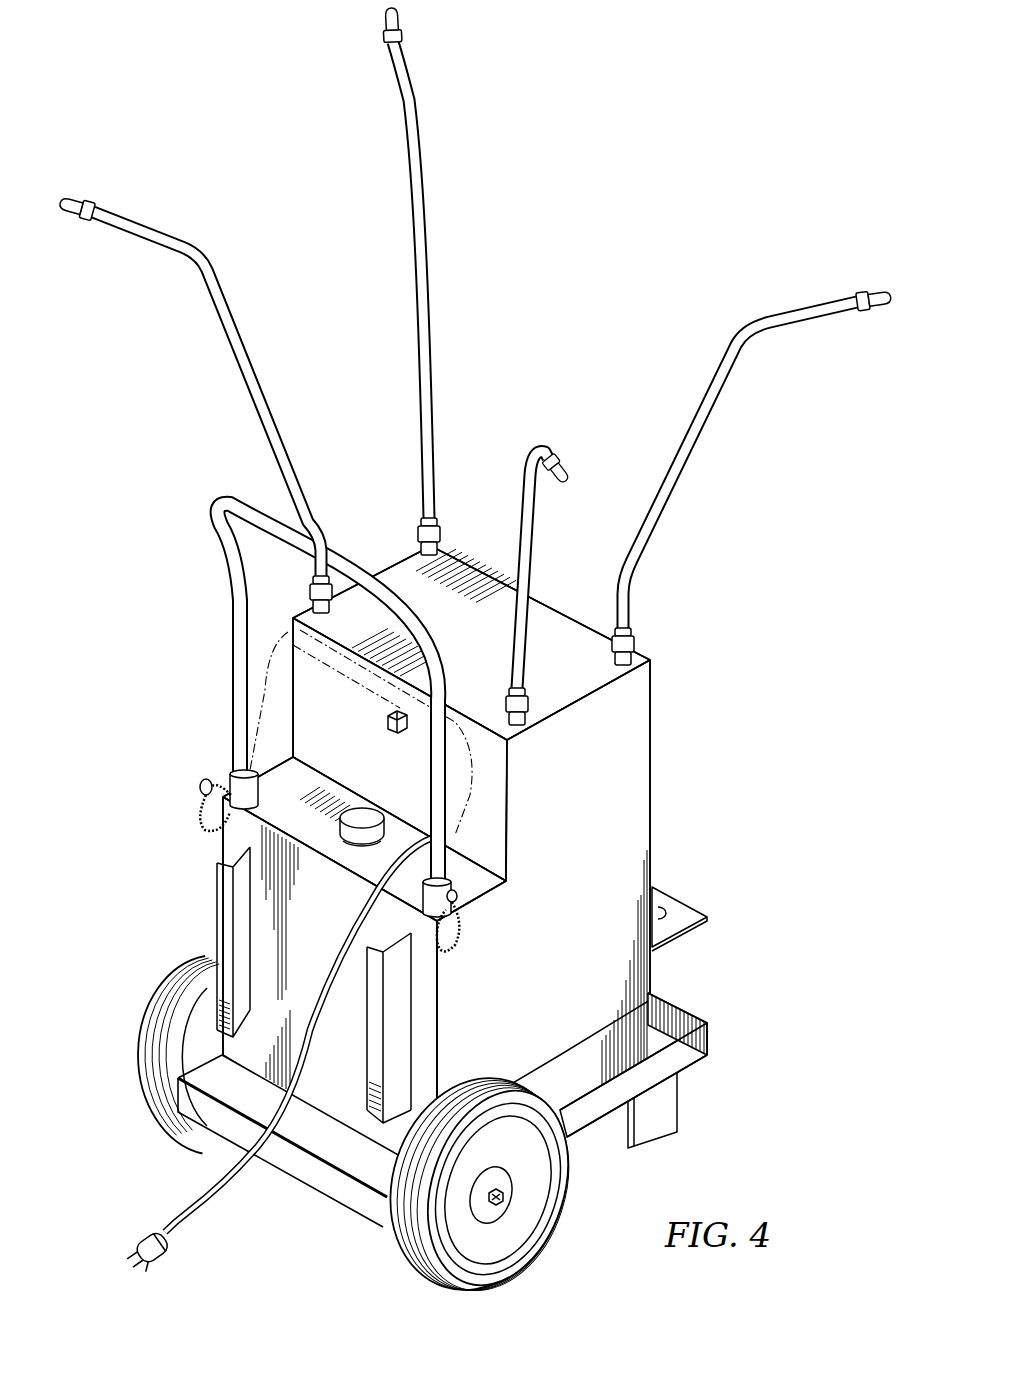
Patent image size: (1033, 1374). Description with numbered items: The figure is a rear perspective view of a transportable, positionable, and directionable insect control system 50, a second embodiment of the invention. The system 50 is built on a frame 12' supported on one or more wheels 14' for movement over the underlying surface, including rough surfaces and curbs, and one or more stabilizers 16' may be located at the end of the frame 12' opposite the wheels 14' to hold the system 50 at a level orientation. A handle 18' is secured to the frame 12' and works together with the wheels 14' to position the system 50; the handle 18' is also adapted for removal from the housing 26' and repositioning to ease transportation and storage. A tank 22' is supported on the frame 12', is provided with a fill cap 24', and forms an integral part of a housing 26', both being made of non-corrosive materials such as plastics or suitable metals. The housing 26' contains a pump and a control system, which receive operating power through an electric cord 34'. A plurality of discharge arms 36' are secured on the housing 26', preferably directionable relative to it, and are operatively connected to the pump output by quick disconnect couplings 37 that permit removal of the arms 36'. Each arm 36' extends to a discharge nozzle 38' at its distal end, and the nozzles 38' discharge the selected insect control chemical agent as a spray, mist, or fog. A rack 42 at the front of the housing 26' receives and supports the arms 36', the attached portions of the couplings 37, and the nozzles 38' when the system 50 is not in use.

The insect control system 50 is at (690, 178).
The frame 12' is at (464, 1110).
The wheels 14' is at (341, 1134).
The stabilizers 16' is at (675, 1112).
The handle 18' is at (308, 693).
The tank 22' is at (313, 860).
The fill cap 24' is at (346, 854).
The housing 26' is at (471, 865).
The electric cord 34' is at (278, 1057).
The discharge arms 36' is at (475, 365).
The quick disconnect couplings 37 is at (418, 535).
The discharge nozzles 38' is at (482, 257).
The rack 42 is at (684, 912).